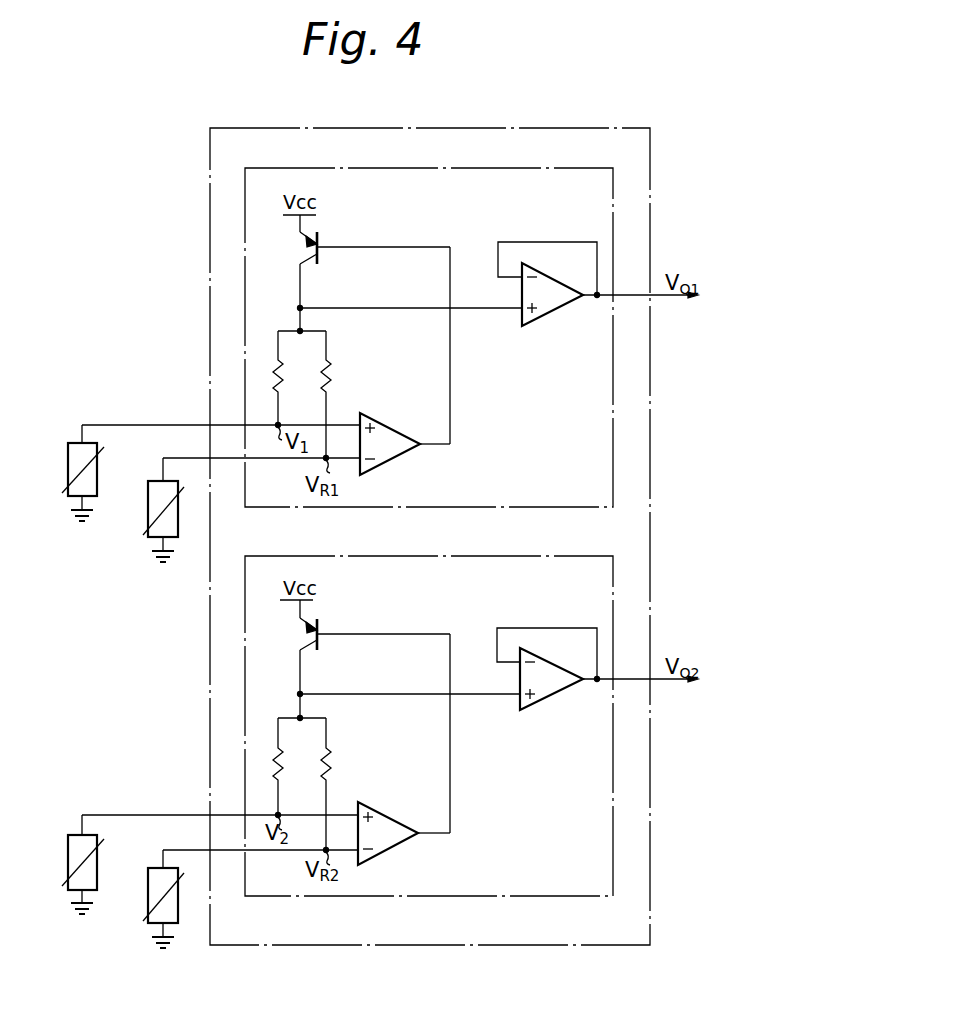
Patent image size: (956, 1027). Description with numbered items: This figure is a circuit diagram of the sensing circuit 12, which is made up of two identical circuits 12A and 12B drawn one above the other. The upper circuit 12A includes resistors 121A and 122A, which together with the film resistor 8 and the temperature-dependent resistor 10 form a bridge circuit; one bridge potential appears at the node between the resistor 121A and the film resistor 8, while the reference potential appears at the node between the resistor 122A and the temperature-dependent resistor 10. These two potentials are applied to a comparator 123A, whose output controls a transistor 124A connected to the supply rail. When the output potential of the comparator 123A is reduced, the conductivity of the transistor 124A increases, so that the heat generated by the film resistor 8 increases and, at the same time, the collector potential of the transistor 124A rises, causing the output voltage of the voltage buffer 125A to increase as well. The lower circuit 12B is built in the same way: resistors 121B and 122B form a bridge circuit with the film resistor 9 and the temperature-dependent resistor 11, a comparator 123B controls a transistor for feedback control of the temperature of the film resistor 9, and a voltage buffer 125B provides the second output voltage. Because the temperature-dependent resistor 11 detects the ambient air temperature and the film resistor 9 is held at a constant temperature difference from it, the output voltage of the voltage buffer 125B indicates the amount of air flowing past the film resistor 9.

The sensing circuit 12 is at (576, 128).
The circuit 12A is at (553, 170).
The circuit 12B is at (543, 558).
The transistor 124A is at (320, 262).
The resistor 121A is at (279, 362).
The resistor 122A is at (328, 377).
The comparator 123A is at (409, 451).
The voltage buffer 125A is at (546, 319).
The resistor 121B is at (282, 750).
The resistor 122B is at (328, 764).
The comparator 123B is at (407, 840).
The voltage buffer 125B is at (317, 641).
The film resistor 8 is at (100, 468).
The film resistor 9 is at (99, 851).
The temperature-dependent resistor 10 is at (146, 507).
The temperature-dependent resistor 11 is at (147, 893).